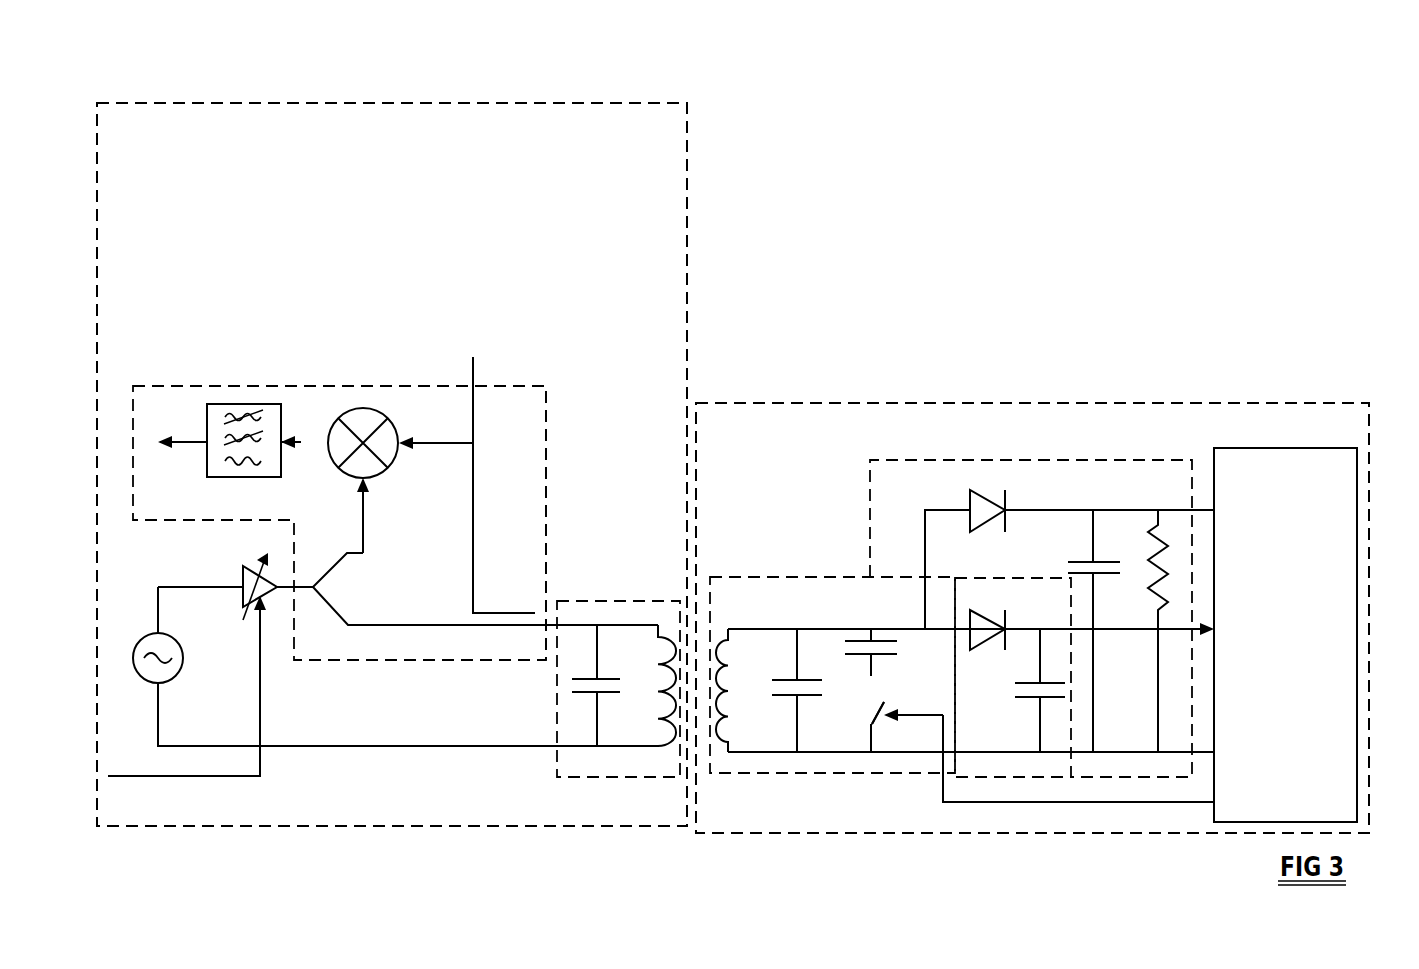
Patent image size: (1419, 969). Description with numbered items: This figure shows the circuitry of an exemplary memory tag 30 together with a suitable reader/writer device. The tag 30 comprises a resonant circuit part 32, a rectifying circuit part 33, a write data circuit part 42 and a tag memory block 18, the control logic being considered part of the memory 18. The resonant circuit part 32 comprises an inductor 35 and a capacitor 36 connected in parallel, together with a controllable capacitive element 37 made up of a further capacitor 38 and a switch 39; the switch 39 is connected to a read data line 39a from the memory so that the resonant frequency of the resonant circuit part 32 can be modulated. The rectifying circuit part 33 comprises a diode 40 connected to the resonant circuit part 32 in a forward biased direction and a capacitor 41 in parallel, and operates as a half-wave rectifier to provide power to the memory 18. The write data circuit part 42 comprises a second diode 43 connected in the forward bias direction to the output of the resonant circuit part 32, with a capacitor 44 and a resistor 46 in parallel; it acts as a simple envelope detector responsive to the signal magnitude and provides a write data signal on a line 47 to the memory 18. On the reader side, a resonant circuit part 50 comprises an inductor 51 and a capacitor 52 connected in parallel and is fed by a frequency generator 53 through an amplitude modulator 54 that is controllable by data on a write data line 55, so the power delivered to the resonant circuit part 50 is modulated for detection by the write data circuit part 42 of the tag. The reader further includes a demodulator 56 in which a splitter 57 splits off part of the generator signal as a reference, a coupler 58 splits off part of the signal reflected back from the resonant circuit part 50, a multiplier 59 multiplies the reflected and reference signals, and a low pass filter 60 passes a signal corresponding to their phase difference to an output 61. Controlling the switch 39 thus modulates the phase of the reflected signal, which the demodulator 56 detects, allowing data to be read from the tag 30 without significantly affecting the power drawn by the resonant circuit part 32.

The tag memory block 18 is at (1346, 716).
The memory tag 30 is at (1018, 833).
The resonant circuit part 32 is at (762, 773).
The rectifying circuit part 33 is at (993, 777).
The inductor L2 35 is at (720, 632).
The capacitor C2 36 is at (800, 698).
The controllable capacitive element 37 is at (867, 676).
The capacitor C3 38 is at (866, 632).
The switch S1 39 is at (877, 713).
The read data line 39a is at (1135, 813).
The diode D1 40 is at (990, 620).
The capacitor C4 41 is at (1047, 697).
The write data circuit part 42 is at (1168, 458).
The diode D2 43 is at (978, 520).
The capacitor C5 44 is at (1086, 558).
The resistor R1 46 is at (1150, 548).
The write data line 47 is at (1214, 512).
The resonant circuit part 50 is at (610, 777).
The inductor L1 51 is at (670, 717).
The capacitor C1 52 is at (590, 700).
The frequency generator 53 is at (133, 672).
The amplitude modulator 54 is at (283, 598).
The write data line 55 is at (207, 776).
The demodulator 56 is at (548, 432).
The splitter 57 is at (330, 605).
The coupler 58 is at (498, 627).
The multiplier 59 is at (395, 420).
The low pass filter 60 is at (218, 403).
The output 61 is at (187, 440).